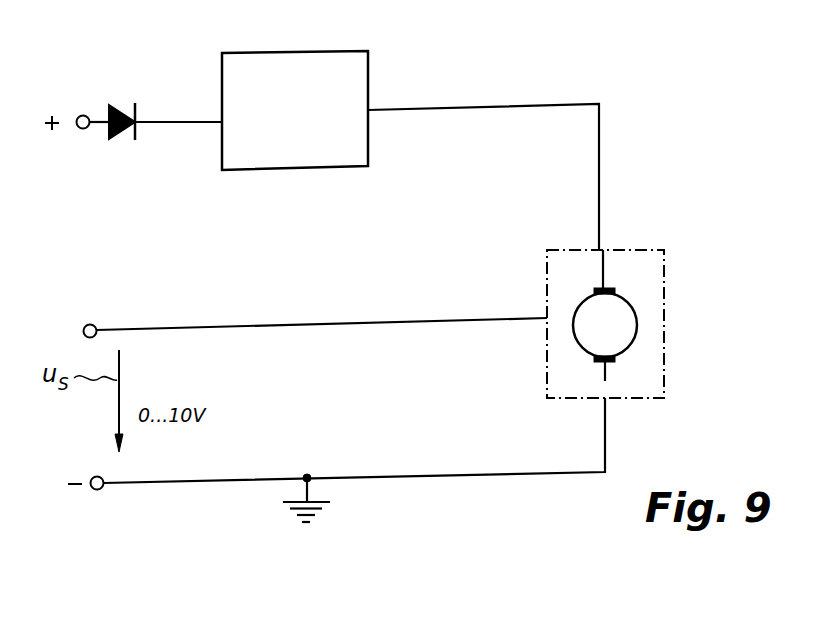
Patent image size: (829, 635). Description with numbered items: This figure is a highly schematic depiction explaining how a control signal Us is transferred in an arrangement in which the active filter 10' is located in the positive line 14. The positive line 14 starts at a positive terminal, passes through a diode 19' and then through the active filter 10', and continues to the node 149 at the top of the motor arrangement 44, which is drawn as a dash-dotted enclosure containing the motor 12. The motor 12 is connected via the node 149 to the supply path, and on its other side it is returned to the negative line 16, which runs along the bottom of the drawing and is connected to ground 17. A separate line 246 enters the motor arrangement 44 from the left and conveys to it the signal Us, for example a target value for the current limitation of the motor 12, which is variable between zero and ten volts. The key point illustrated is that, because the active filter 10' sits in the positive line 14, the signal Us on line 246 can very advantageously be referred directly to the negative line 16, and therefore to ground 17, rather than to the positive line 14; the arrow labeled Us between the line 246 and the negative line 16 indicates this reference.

The diode 19' is at (142, 90).
The positive line 14 is at (150, 123).
The active filter 10' is at (329, 110).
The node 149 is at (599, 248).
The motor arrangement 44 is at (635, 248).
The motor 12 is at (634, 314).
The line 246 is at (268, 325).
The negative line 16 is at (450, 473).
The ground 17 is at (313, 490).